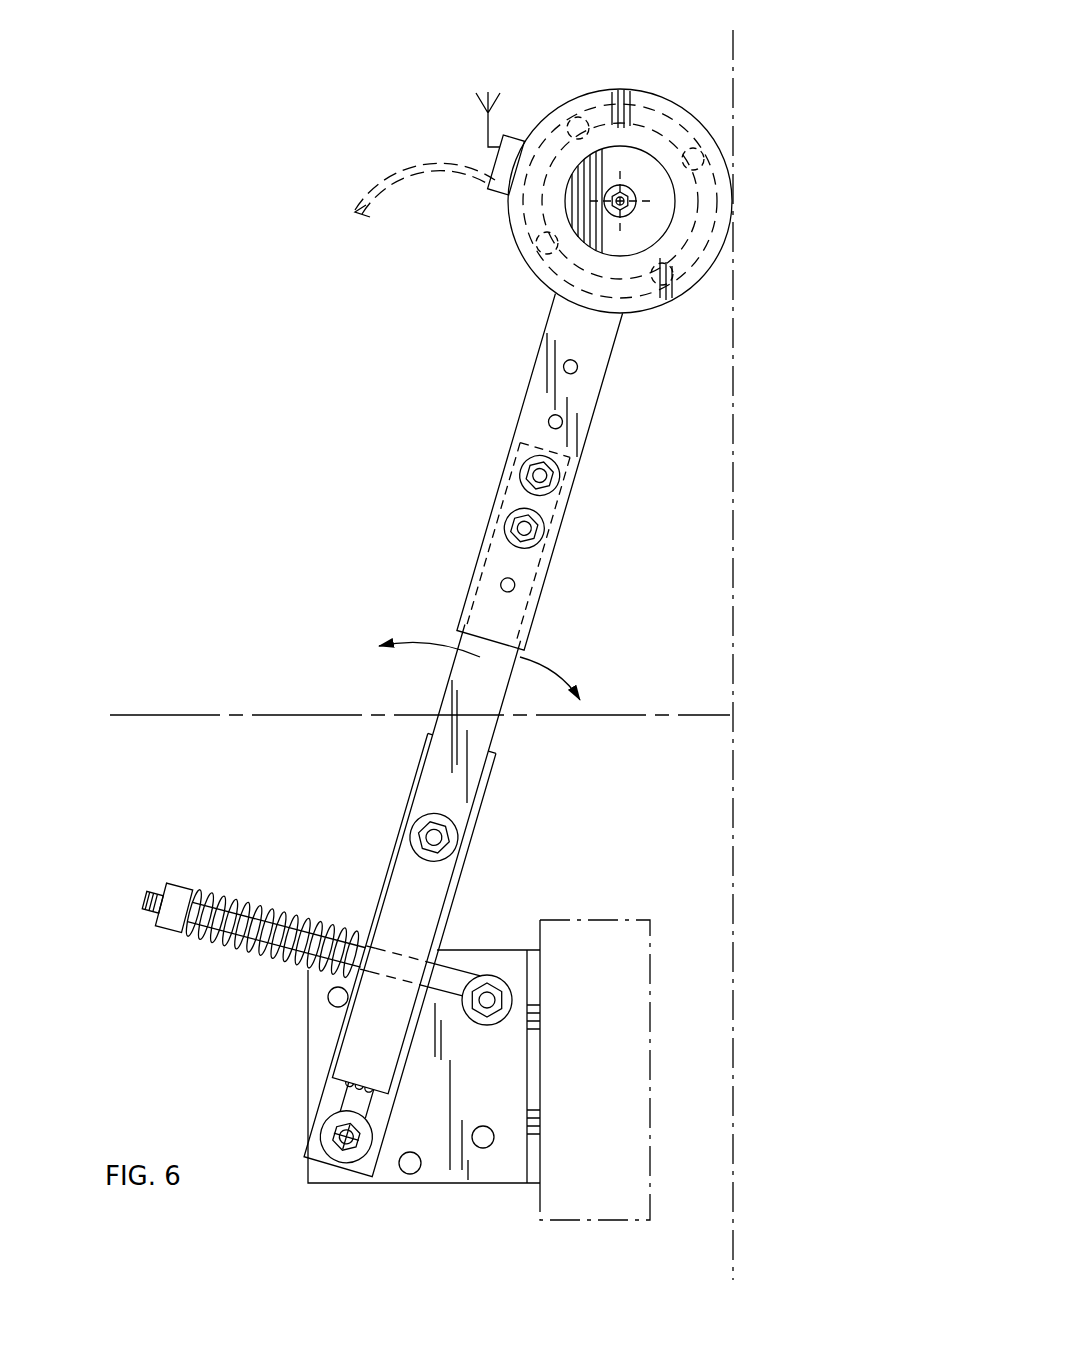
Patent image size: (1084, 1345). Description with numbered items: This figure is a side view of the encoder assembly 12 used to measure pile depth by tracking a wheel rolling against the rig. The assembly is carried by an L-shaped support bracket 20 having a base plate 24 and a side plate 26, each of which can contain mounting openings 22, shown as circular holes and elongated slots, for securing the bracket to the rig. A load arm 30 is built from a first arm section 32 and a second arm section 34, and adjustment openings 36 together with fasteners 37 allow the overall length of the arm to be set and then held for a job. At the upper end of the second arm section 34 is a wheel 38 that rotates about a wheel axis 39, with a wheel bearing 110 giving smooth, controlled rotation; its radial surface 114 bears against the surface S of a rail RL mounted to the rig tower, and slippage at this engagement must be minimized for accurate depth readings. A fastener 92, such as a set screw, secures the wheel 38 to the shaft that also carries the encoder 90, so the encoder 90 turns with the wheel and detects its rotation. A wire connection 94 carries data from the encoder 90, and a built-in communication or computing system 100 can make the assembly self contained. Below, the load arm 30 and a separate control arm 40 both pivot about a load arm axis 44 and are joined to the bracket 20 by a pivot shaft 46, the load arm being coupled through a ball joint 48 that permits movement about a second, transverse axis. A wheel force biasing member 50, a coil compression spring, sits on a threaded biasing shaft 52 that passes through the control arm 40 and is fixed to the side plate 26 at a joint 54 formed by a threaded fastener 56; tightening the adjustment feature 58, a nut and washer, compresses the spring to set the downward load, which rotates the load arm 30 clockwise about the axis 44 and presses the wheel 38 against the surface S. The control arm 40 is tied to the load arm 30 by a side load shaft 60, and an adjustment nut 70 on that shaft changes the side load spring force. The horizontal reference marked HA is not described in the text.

The encoder assembly 12 is at (278, 266).
The support bracket 20 is at (449, 1186).
The mounting opening 22 is at (330, 1002).
The base plate 24 is at (538, 1153).
The side plate 26 is at (481, 1172).
The load arm 30 is at (453, 768).
The first arm section 32 is at (487, 720).
The second arm section 34 is at (598, 395).
The adjustment openings 36 is at (563, 368).
The fasteners 37 is at (520, 475).
The wheel 38 is at (631, 201).
The wheel axis 39 is at (607, 216).
The control arm 40 is at (413, 763).
The load arm axis 44 is at (335, 1150).
The pivot shaft 46 is at (352, 1148).
The ball joint 48 is at (327, 1117).
The wheel force biasing member 50 is at (264, 905).
The biasing shaft 52 is at (258, 948).
The joint 54 is at (508, 975).
The threaded fastener 56 is at (493, 1006).
The adjustment feature 58 is at (181, 884).
The side load shaft 60 is at (462, 816).
The adjustment nut 70 is at (448, 838).
The encoder 90 is at (600, 93).
The fastener 92 is at (632, 210).
The wire connection 94 is at (392, 186).
The communication system and/or computing system 100 is at (500, 193).
The wheel bearing 110 is at (652, 167).
The radial surface 114 is at (649, 90).
The rail RL is at (733, 512).
The surface S is at (732, 622).
The horizontal axis HA is at (274, 732).